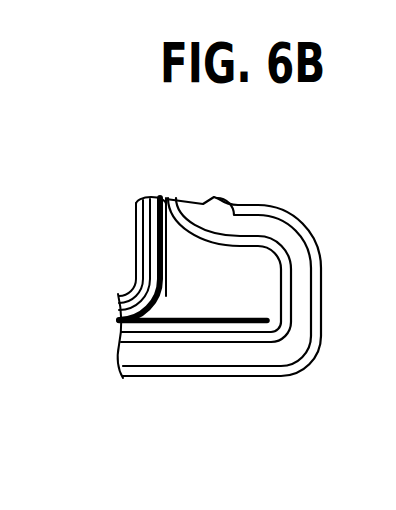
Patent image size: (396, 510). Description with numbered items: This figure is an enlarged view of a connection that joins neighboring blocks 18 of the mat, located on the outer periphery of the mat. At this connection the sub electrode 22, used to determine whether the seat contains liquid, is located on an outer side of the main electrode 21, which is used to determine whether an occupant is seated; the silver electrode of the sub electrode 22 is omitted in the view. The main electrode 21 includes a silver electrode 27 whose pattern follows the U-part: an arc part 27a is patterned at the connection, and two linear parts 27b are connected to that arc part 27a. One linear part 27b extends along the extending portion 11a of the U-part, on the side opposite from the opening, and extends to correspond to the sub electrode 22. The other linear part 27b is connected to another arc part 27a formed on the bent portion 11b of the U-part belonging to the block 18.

The extending portion 11a is at (294, 280).
The bent portion 11b is at (172, 198).
The block 18 is at (254, 202).
The main electrode 21 is at (227, 270).
The sub electrode 22 is at (284, 352).
The silver electrode 27 is at (258, 313).
The arc part 27a is at (136, 203).
The linear part 27b is at (146, 262).